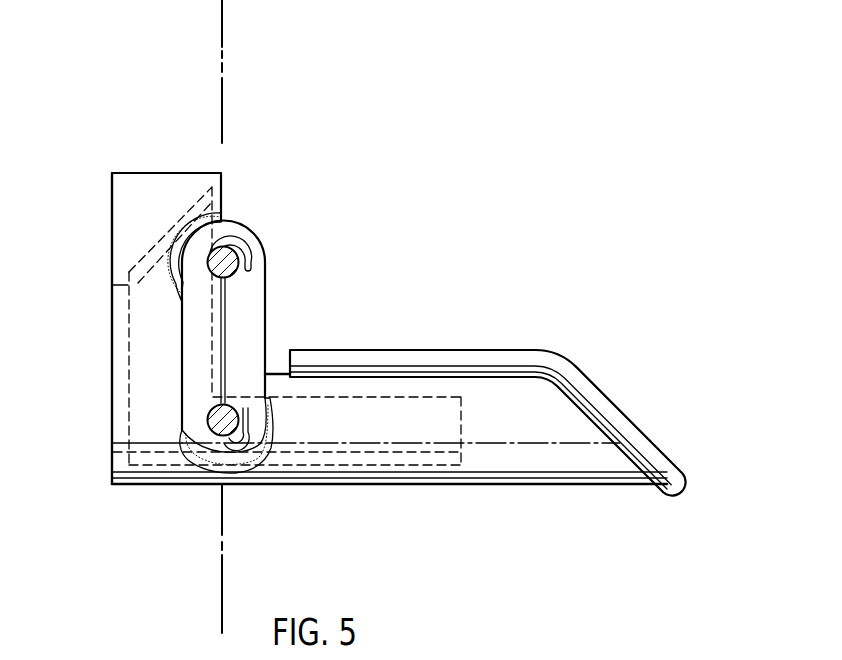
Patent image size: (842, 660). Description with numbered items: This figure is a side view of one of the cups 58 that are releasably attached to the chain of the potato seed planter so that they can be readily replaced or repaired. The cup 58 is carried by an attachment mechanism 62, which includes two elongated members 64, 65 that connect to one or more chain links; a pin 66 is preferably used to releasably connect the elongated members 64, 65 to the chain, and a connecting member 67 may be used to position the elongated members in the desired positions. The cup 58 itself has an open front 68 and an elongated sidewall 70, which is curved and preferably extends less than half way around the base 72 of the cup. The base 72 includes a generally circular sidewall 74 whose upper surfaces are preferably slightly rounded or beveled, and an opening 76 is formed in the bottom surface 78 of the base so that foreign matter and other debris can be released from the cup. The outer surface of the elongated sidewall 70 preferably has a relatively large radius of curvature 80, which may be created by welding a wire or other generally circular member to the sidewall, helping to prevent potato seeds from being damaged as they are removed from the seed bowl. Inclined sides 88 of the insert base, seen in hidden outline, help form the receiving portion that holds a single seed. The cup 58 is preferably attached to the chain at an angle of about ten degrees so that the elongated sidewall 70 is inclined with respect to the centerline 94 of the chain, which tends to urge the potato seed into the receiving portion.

The cup 58 is at (545, 225).
The attachment mechanism 62 is at (320, 218).
The elongated member 64 is at (240, 270).
The elongated member 65 is at (218, 425).
The pin 66 is at (237, 246).
The connecting member 67 is at (257, 320).
The open front 68 is at (655, 352).
The elongated sidewall 70 is at (549, 453).
The base 72 is at (118, 461).
The generally circular sidewall 74 is at (143, 174).
The opening 76 is at (118, 325).
The bottom surface 78 is at (112, 225).
The radius of curvature 80 is at (632, 420).
The inclined sides 88 is at (162, 240).
The centerline 94 is at (223, 29).